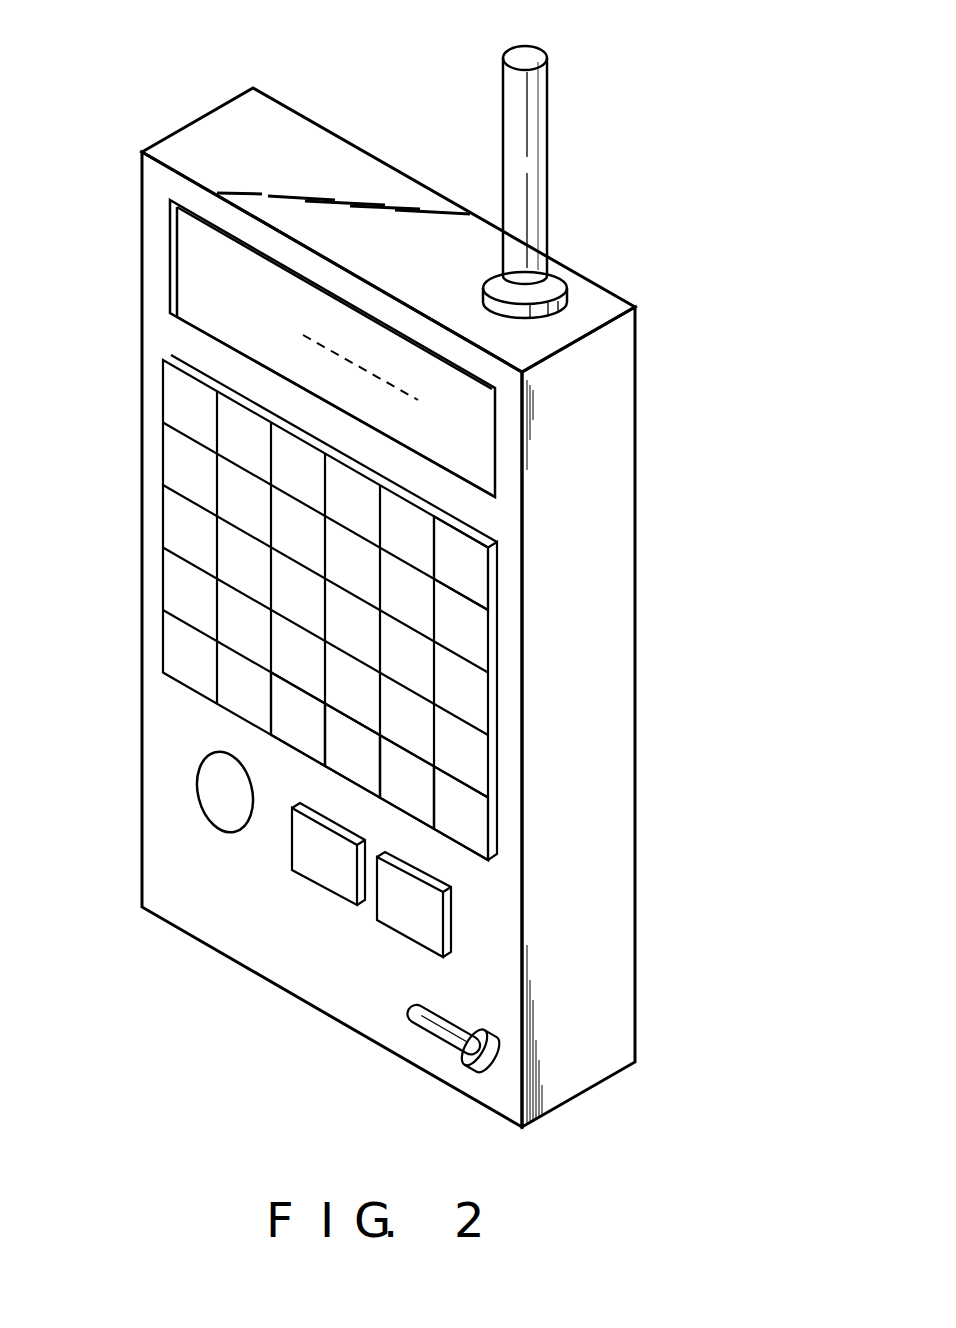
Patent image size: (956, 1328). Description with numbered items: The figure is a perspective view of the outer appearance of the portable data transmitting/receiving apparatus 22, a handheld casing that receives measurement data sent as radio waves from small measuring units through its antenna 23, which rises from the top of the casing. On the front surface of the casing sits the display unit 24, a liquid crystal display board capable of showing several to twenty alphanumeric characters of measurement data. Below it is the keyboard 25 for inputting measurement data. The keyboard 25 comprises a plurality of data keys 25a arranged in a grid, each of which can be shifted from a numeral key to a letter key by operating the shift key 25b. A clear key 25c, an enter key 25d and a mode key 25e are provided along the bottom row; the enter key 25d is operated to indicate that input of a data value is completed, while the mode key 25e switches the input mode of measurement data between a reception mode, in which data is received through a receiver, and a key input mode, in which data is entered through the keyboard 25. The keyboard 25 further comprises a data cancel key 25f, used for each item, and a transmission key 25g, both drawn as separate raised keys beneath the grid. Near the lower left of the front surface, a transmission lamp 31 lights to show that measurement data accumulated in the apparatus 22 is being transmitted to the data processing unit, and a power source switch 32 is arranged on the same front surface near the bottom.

The portable data transmitting/receiving apparatus 22 is at (655, 325).
The antenna 23 is at (548, 162).
The display unit 24 is at (183, 303).
The keyboard 25 is at (339, 607).
The data keys 25a is at (484, 576).
The shift key 25b is at (268, 735).
The clear key 25c is at (352, 768).
The enter key 25d is at (482, 773).
The mode key 25e is at (483, 845).
The data cancel key 25f is at (322, 887).
The transmission key 25g is at (453, 920).
The transmission lamp 31 is at (202, 782).
The power source switch 32 is at (462, 1058).